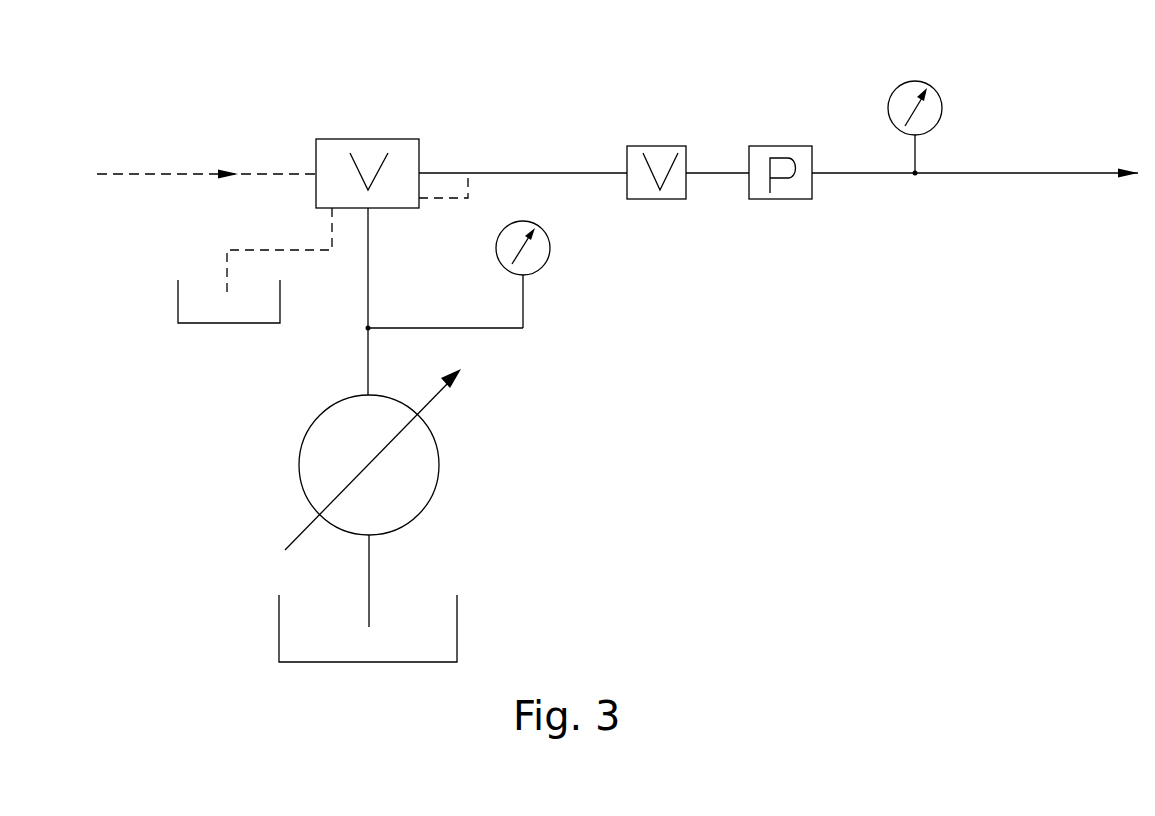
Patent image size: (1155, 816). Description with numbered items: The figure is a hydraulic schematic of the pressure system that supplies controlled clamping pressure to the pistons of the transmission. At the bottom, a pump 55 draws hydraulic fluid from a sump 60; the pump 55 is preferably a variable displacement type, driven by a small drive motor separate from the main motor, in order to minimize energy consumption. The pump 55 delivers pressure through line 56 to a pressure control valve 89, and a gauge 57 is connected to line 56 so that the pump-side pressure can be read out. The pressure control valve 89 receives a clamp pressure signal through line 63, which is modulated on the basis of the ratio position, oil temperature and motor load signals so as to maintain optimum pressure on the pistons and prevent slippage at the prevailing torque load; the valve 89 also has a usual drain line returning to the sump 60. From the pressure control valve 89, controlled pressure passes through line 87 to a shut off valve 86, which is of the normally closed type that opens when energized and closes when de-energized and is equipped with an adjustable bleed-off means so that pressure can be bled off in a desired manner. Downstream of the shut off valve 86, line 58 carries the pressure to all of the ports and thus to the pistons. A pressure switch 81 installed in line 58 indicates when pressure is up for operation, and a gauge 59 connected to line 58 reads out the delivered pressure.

The line 63 is at (185, 173).
The pressure control valve 89 is at (343, 139).
The line 87 is at (505, 173).
The shut off valve 86 is at (650, 146).
The pressure switch 81 is at (766, 146).
The gauge 59 is at (942, 116).
The line 58 is at (1077, 173).
The gauge 57 is at (549, 241).
The line 56 is at (495, 330).
The pump 55 is at (438, 485).
The sump 60 is at (178, 300).